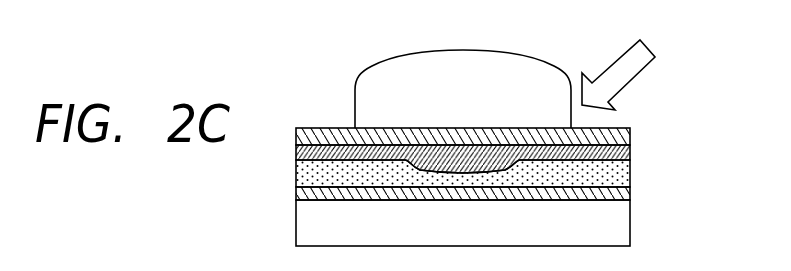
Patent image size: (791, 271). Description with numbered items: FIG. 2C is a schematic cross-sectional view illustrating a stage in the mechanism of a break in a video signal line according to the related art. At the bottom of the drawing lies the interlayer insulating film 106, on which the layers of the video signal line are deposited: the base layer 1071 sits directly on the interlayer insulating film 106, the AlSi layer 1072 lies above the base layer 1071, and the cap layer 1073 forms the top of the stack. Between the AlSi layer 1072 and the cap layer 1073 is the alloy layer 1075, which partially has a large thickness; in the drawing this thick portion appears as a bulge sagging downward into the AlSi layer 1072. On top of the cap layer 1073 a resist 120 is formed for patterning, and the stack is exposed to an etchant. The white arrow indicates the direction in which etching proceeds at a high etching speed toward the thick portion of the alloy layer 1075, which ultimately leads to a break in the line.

The resist 120 is at (401, 57).
The cap layer 1073 is at (620, 128).
The alloy layer 1075 is at (630, 152).
The AlSi layer 1072 is at (623, 172).
The base layer 1071 is at (630, 197).
The interlayer insulating film 106 is at (623, 225).